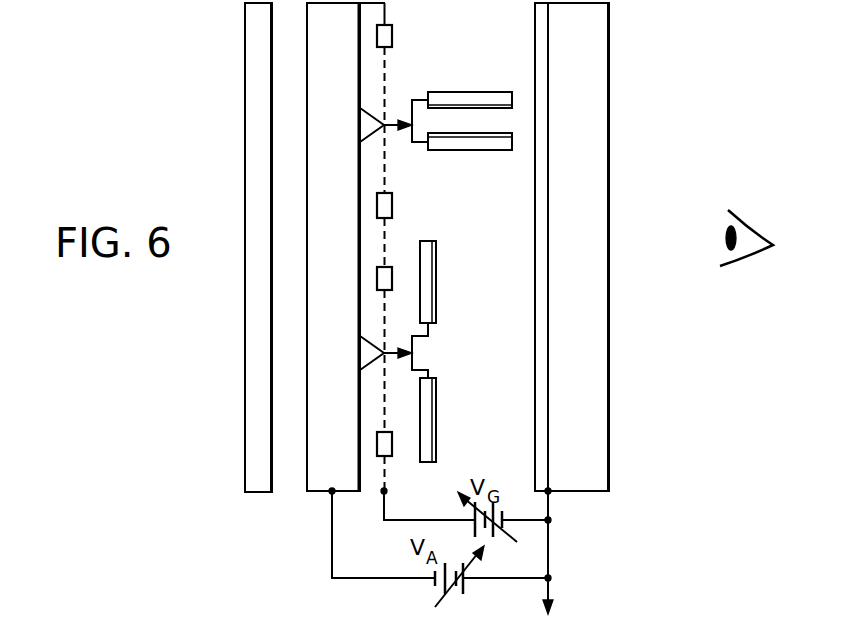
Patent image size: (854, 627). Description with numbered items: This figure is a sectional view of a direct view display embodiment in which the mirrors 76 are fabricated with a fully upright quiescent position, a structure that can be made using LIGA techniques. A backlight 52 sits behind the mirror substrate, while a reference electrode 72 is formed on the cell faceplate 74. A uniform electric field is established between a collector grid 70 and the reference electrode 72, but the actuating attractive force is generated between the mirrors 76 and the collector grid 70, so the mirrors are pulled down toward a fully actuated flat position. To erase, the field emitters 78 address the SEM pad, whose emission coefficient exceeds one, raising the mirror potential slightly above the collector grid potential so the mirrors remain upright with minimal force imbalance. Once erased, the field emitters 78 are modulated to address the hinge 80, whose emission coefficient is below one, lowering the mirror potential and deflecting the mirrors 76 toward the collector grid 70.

The backlight 52 is at (257, 400).
The collector grid 70 is at (392, 32).
The reference electrode 72 is at (545, 410).
The cell faceplate 74 is at (593, 44).
The mirrors 76 is at (493, 172).
The field emitters 78 is at (368, 124).
The hinge 80 is at (413, 345).